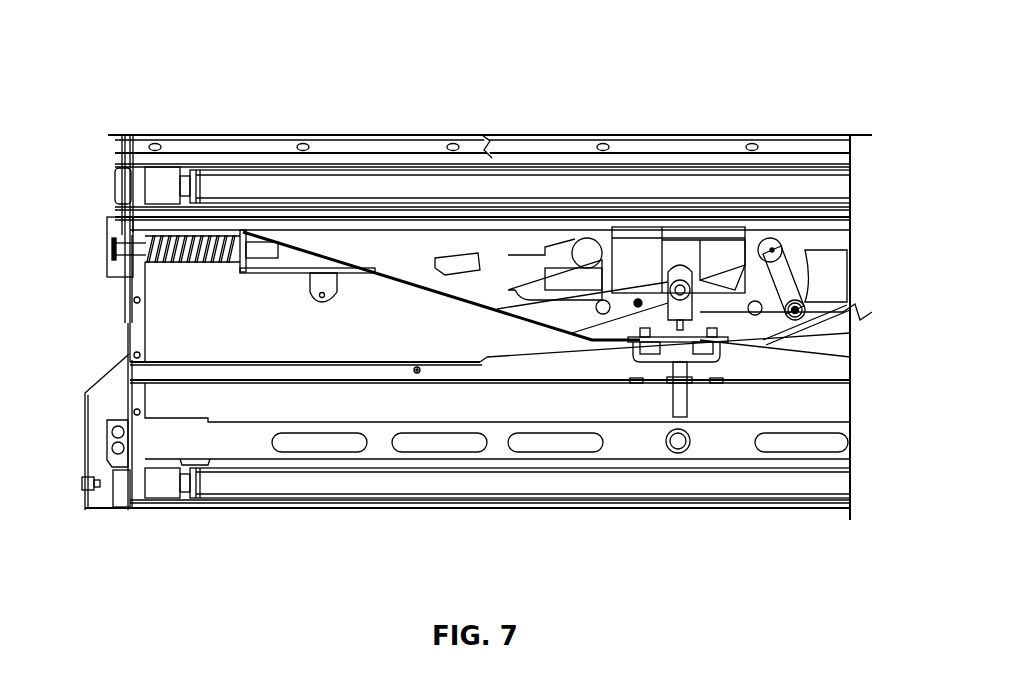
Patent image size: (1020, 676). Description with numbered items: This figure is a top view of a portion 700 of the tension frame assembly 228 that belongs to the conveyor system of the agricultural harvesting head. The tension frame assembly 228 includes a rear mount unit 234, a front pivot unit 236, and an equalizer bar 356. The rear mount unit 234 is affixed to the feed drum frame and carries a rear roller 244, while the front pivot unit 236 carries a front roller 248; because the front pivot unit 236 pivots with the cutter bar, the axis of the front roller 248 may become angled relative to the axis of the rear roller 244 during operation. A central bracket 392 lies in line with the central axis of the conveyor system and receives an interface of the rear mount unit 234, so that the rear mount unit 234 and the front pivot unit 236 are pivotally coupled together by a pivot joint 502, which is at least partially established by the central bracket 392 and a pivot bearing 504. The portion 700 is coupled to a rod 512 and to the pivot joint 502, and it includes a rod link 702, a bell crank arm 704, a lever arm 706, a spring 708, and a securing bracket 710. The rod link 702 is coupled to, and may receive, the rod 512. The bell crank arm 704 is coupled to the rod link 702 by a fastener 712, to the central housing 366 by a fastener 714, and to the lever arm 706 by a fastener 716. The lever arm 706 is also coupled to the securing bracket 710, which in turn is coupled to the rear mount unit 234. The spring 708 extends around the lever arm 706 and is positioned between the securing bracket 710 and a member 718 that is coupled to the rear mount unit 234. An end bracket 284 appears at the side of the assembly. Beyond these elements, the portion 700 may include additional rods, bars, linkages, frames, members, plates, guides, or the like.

The tension frame assembly 228 is at (726, 45).
The rear mount unit 234 is at (825, 215).
The front pivot unit 236 is at (835, 365).
The rear roller 244 is at (212, 190).
The front roller 248 is at (350, 490).
The end bracket 284 is at (85, 430).
The equalizer bar 356 is at (750, 425).
The central housing 366 is at (385, 262).
The central bracket 392 is at (565, 372).
The pivot joint 502 is at (660, 350).
The pivot bearing 504 is at (852, 334).
The rod 512 is at (687, 408).
The portion of tension frame assembly 700 is at (700, 105).
The rod link 702 is at (660, 331).
The bell crank arm 704 is at (780, 282).
The lever arm 706 is at (698, 245).
The spring 708 is at (173, 262).
The securing bracket 710 is at (107, 272).
The fastener 712 is at (497, 309).
The fastener 714 is at (800, 312).
The fastener 716 is at (776, 249).
The member 718 is at (258, 272).